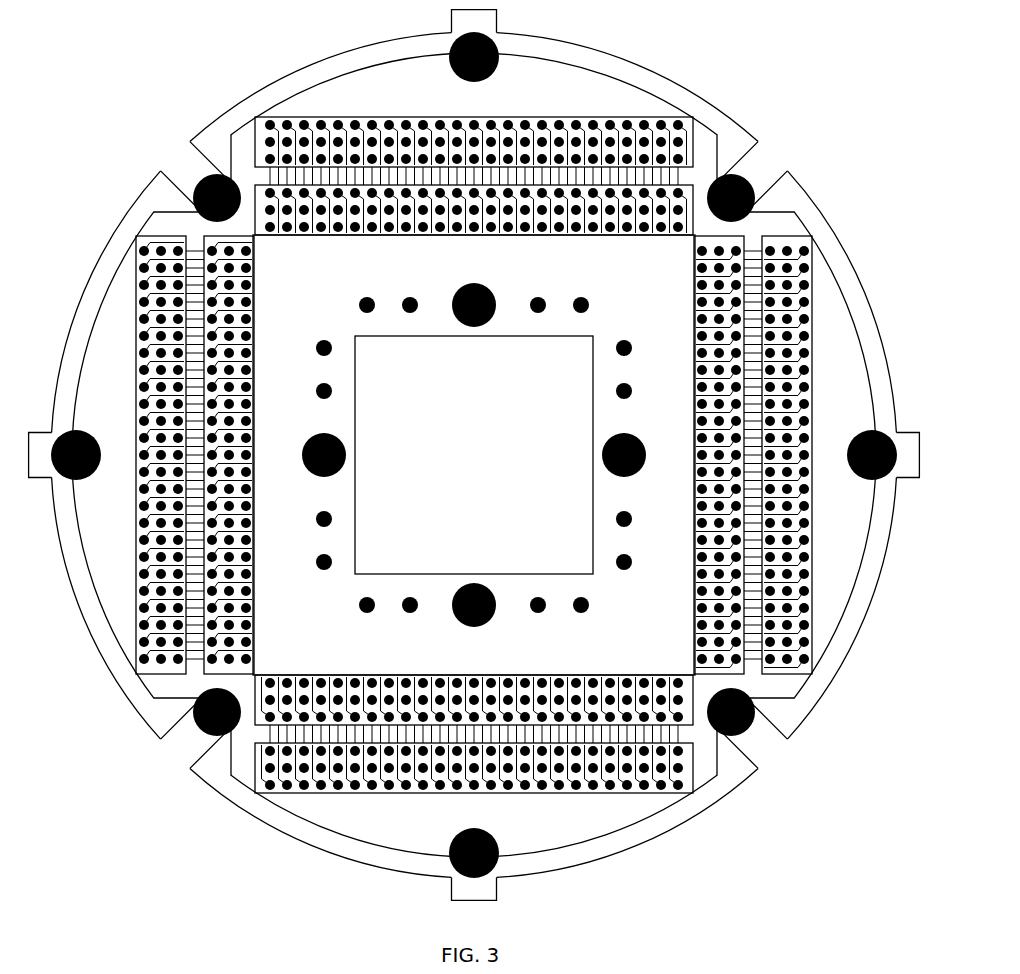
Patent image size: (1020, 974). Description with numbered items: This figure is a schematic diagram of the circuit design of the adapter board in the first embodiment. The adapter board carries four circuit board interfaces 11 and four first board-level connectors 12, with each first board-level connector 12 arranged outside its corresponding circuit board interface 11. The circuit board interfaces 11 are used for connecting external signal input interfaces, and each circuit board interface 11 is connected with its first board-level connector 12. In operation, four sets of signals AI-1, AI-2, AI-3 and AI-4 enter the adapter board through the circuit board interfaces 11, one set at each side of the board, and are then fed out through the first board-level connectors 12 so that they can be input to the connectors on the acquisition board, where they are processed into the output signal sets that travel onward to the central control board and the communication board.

The first signal set AI-1 is at (135, 446).
The second signal set AI-2 is at (690, 782).
The third signal set AI-3 is at (798, 243).
The fourth signal set AI-4 is at (262, 131).
The circuit board interface 11 is at (247, 252).
The first board-level connector 12 is at (135, 315).